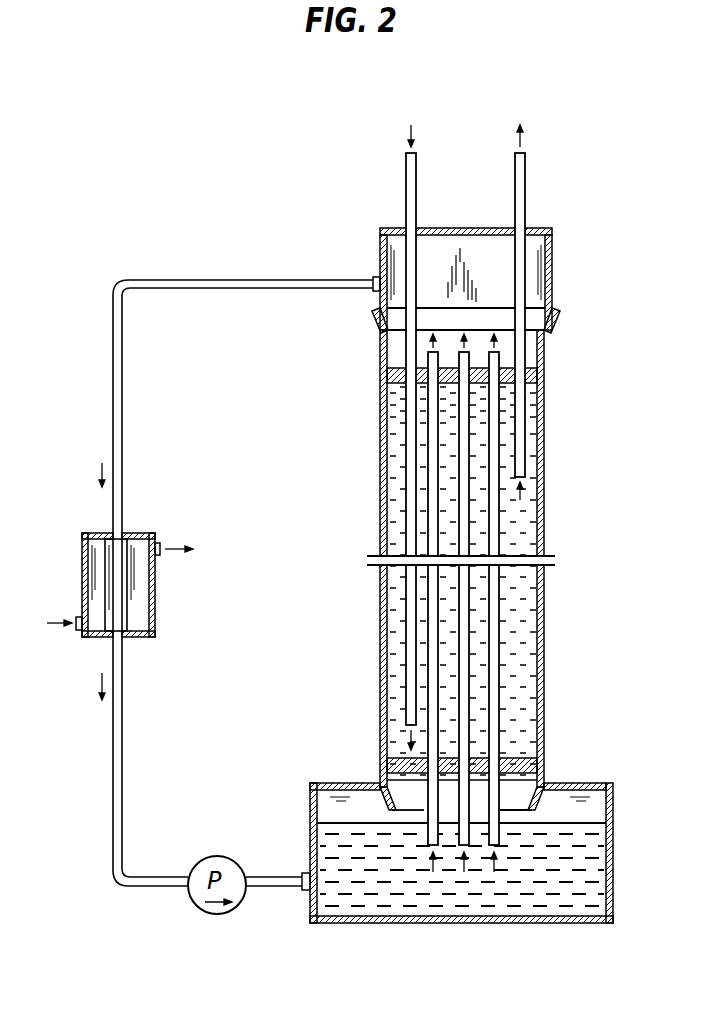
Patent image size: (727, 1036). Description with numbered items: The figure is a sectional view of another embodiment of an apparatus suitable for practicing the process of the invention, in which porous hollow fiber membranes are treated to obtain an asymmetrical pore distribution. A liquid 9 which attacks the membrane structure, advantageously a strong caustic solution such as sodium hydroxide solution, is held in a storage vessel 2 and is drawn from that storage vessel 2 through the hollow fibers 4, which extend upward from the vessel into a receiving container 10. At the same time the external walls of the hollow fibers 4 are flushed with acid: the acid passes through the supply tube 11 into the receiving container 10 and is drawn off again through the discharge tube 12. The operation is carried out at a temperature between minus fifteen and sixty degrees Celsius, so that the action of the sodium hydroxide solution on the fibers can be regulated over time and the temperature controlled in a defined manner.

The storage vessel 2 is at (597, 808).
The hollow fibers 4 is at (434, 518).
The liquid 9 is at (587, 882).
The receiving container 10 is at (546, 626).
The supply tube 11 is at (407, 216).
The discharge tube 12 is at (521, 262).